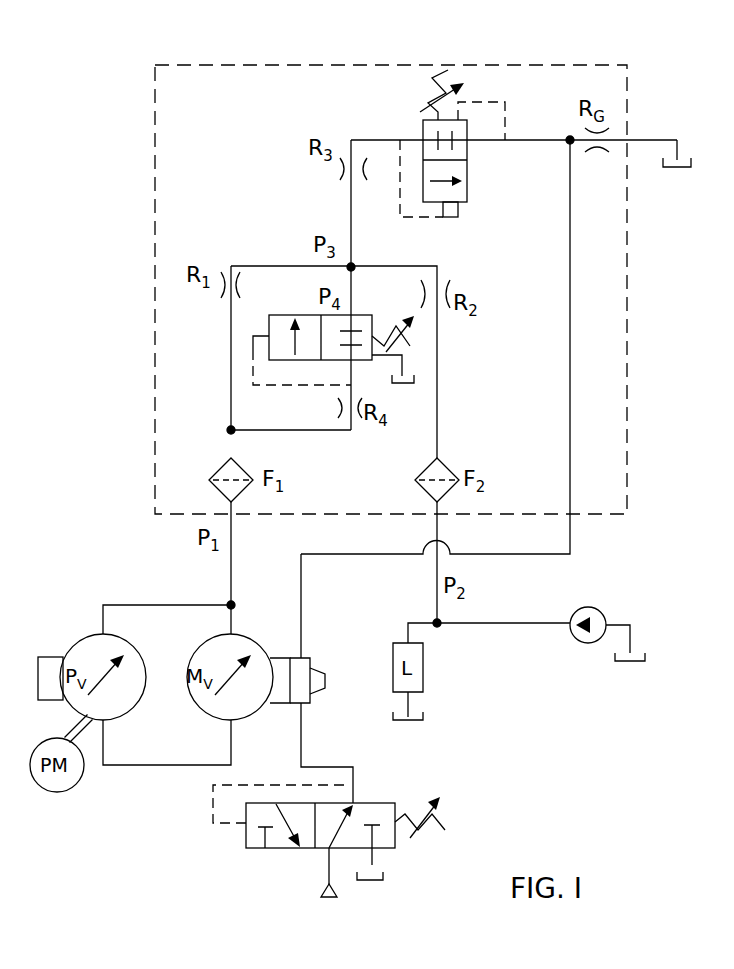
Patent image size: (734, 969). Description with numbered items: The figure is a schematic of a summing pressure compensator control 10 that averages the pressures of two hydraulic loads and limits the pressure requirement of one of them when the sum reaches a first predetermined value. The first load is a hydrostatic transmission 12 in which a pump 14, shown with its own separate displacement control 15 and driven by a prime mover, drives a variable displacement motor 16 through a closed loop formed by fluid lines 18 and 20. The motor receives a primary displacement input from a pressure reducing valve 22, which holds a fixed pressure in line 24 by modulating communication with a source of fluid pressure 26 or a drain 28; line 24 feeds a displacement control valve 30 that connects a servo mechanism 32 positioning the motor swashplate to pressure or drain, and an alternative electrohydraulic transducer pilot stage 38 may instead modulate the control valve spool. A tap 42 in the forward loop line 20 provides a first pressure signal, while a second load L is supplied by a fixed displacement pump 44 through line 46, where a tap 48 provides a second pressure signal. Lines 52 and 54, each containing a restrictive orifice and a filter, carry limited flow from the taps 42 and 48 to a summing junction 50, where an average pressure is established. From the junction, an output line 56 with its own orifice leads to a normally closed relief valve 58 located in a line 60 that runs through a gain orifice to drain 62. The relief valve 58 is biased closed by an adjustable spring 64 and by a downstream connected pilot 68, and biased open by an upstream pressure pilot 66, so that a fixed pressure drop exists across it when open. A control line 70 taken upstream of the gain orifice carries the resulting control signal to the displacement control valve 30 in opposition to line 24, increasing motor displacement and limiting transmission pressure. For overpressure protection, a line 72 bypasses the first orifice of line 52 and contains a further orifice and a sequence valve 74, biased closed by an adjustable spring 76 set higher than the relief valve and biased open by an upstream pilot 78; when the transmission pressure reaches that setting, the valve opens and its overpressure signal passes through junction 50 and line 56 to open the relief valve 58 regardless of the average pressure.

The summing pressure compensator control 10 is at (642, 320).
The hydrostatic transmission 12 is at (96, 666).
The pump 14 is at (131, 708).
The control 15 is at (53, 656).
The variable displacement motor 16 is at (192, 648).
The fluid line 18 is at (170, 766).
The fluid line 20 is at (166, 604).
The pressure reducing valve 22 is at (263, 859).
The line 24 is at (303, 752).
The source of fluid pressure 26 is at (338, 897).
The drain 28 is at (385, 877).
The displacement control valve 30 is at (304, 665).
The servo mechanism 32 is at (276, 658).
The electrohydraulic transducer pilot stage 38 is at (320, 684).
The tap 42 is at (235, 603).
The fixed displacement pump 44 is at (600, 608).
The line 46 is at (485, 625).
The tap 48 is at (433, 620).
The summing junction 50 is at (355, 264).
The line 52 is at (230, 380).
The line 54 is at (437, 372).
The output line 56 is at (350, 202).
The relief valve 58 is at (468, 188).
The line 60 is at (510, 141).
The drain 62 is at (680, 168).
The adjustable spring 64 is at (428, 80).
The pressure pilot 66 is at (450, 214).
The downstream connected pilot 68 is at (505, 102).
The control line 70 is at (568, 290).
The line 72 is at (288, 430).
The sequence valve 74 is at (302, 314).
The adjustable spring 76 is at (378, 332).
The upstream pilot 78 is at (298, 387).